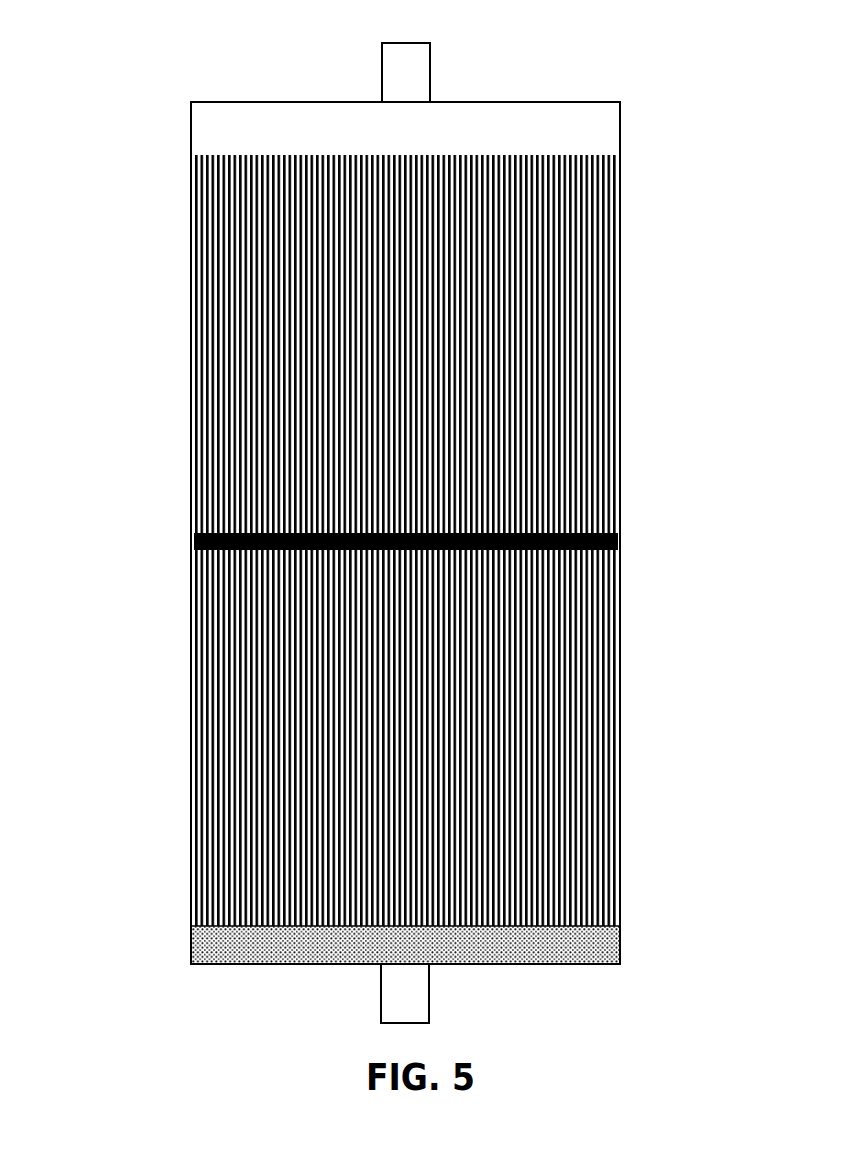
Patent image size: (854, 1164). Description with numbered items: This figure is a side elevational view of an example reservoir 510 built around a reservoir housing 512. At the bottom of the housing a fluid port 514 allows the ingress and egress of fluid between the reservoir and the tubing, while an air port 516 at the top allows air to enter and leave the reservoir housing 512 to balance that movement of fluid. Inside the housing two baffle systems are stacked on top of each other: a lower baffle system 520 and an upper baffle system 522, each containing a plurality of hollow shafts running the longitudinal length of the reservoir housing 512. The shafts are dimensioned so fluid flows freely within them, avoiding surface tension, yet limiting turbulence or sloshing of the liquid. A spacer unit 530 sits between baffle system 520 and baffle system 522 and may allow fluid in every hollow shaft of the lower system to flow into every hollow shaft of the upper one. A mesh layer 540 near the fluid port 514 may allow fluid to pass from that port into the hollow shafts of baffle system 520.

The reservoir 510 is at (404, 522).
The reservoir housing 512 is at (615, 777).
The fluid port 514 is at (398, 973).
The air port 516 is at (373, 65).
The baffle system 520 is at (220, 843).
The baffle system 522 is at (220, 263).
The spacer unit 530 is at (190, 545).
The mesh layer 540 is at (578, 940).